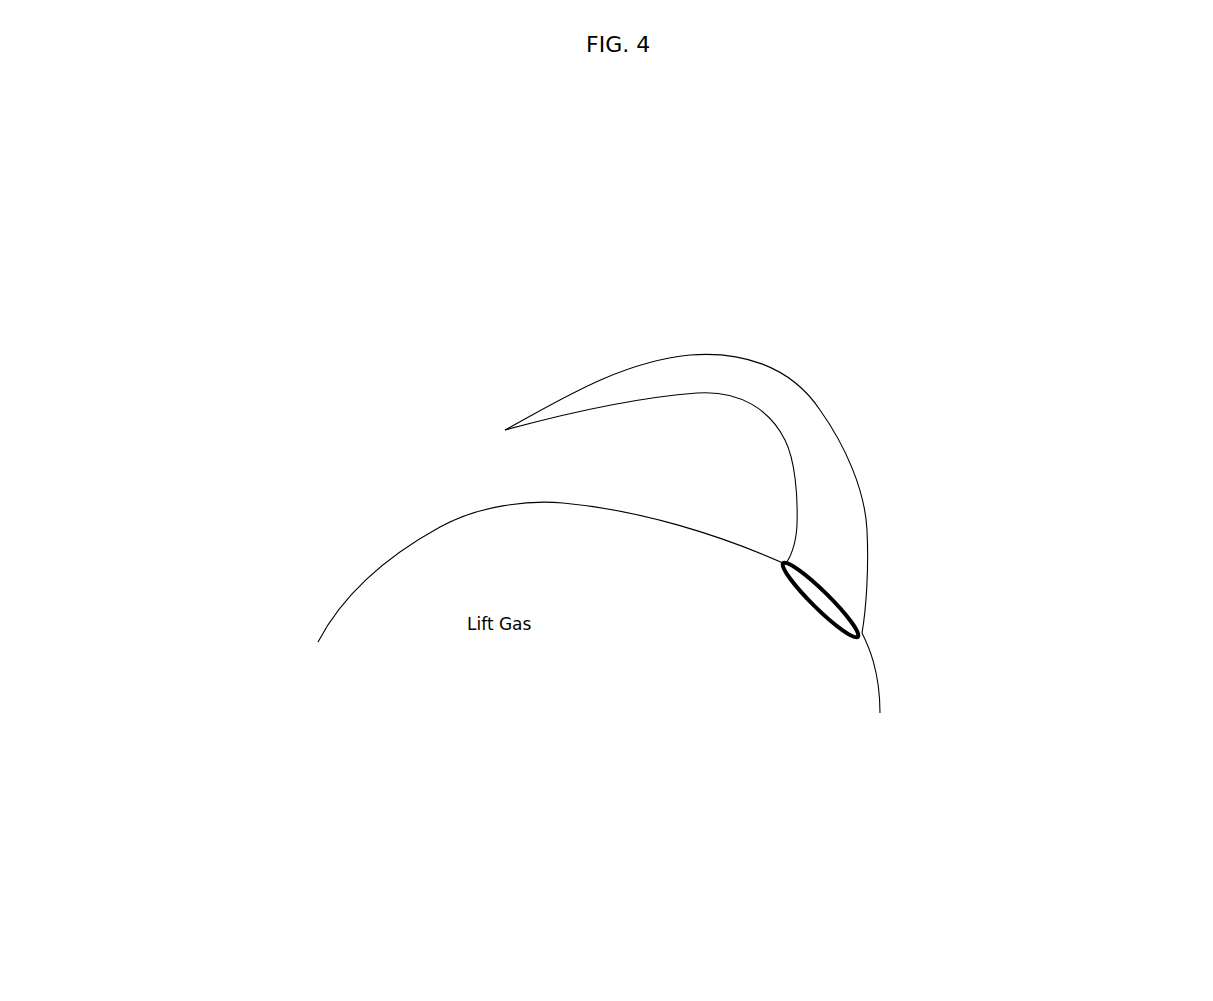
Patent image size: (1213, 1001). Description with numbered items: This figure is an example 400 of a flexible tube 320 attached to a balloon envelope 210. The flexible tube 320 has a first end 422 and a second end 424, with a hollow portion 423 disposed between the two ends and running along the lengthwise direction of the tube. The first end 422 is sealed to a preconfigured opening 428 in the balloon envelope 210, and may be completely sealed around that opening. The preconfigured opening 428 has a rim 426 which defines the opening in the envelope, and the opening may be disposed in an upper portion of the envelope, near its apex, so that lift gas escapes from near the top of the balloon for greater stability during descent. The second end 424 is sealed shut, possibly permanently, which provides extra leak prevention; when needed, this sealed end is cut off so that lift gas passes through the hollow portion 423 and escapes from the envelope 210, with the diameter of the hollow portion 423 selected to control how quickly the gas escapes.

The example 400 is at (1068, 53).
The balloon envelope 210 is at (381, 554).
The flexible tube 320 is at (847, 447).
The first end 422 is at (927, 597).
The hollow portion 423 is at (733, 373).
The second end 424 is at (493, 419).
The rim 426 is at (858, 637).
The preconfigured opening 428 is at (818, 606).